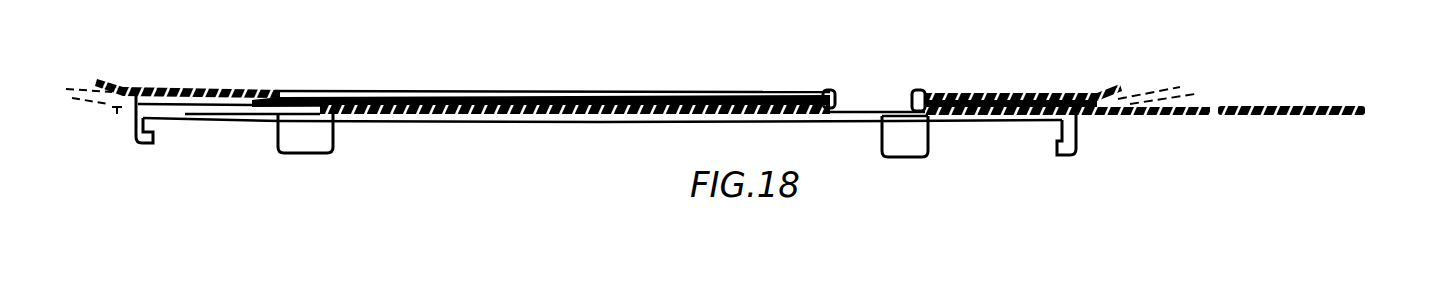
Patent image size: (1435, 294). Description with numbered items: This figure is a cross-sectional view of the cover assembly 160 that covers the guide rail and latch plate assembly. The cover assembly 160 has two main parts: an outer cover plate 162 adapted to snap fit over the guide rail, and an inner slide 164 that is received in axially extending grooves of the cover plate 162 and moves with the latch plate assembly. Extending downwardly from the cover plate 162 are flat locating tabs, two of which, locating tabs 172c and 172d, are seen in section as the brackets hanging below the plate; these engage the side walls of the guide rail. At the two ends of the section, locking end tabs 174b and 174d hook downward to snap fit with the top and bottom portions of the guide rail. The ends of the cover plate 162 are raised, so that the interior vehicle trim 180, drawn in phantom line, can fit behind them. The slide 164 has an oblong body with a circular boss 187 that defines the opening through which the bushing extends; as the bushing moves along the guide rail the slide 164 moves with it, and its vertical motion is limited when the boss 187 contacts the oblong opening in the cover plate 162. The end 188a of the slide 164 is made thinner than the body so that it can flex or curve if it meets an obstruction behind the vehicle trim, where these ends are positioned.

The cover assembly 160 is at (206, 55).
The cover plate 162 is at (305, 90).
The slide 164 is at (1232, 107).
The locating tab 172c is at (910, 150).
The locating tab 172d is at (310, 143).
The locking end tab 174b is at (1057, 150).
The locking end tab 174d is at (150, 143).
The interior vehicle trim 180 is at (1150, 85).
The circular boss 187 is at (848, 91).
The end of the slide 188a is at (1302, 113).